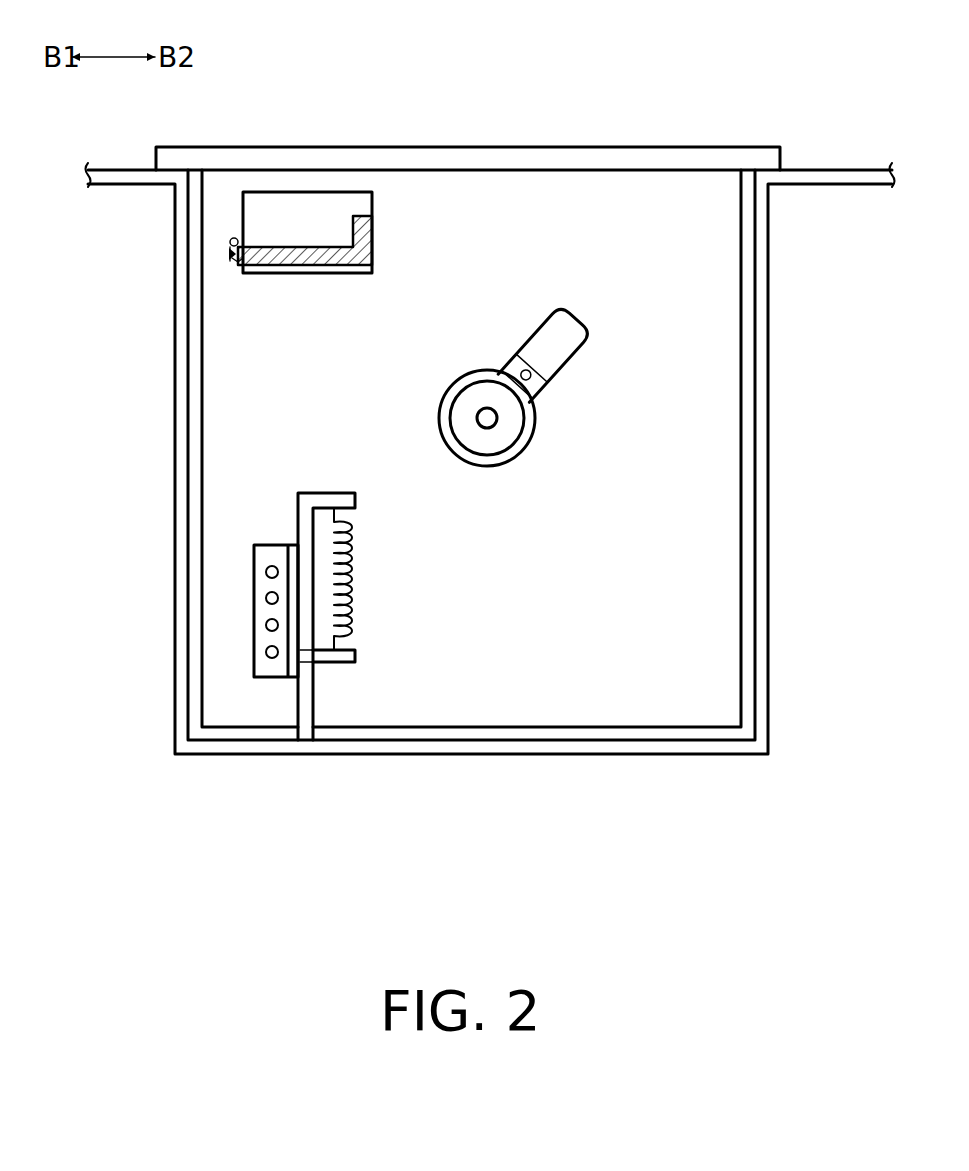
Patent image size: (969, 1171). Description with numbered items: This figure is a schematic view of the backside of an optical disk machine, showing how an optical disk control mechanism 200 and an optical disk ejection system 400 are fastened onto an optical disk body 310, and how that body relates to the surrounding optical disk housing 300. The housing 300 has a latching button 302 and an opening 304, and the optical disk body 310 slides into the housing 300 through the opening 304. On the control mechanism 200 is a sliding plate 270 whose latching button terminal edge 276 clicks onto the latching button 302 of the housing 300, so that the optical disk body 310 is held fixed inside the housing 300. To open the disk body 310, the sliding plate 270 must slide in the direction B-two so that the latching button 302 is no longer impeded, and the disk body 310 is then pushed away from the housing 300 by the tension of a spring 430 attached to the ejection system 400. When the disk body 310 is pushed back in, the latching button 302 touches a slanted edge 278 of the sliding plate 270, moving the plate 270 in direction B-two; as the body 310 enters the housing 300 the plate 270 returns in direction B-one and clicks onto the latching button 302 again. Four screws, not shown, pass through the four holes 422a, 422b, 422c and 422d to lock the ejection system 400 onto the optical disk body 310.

The optical disk control mechanism 200 is at (258, 215).
The sliding plate 270 is at (250, 262).
The latching button terminal edge 276 is at (230, 255).
The slanted edge 278 is at (234, 262).
The optical disk housing 300 is at (176, 445).
The latching button 302 is at (231, 241).
The opening 304 is at (750, 123).
The optical disk body 310 is at (520, 707).
The optical disk ejection system 400 is at (338, 675).
The hole 422a is at (266, 652).
The hole 422b is at (266, 625).
The hole 422c is at (266, 598).
The hole 422d is at (266, 572).
The spring 430 is at (349, 630).